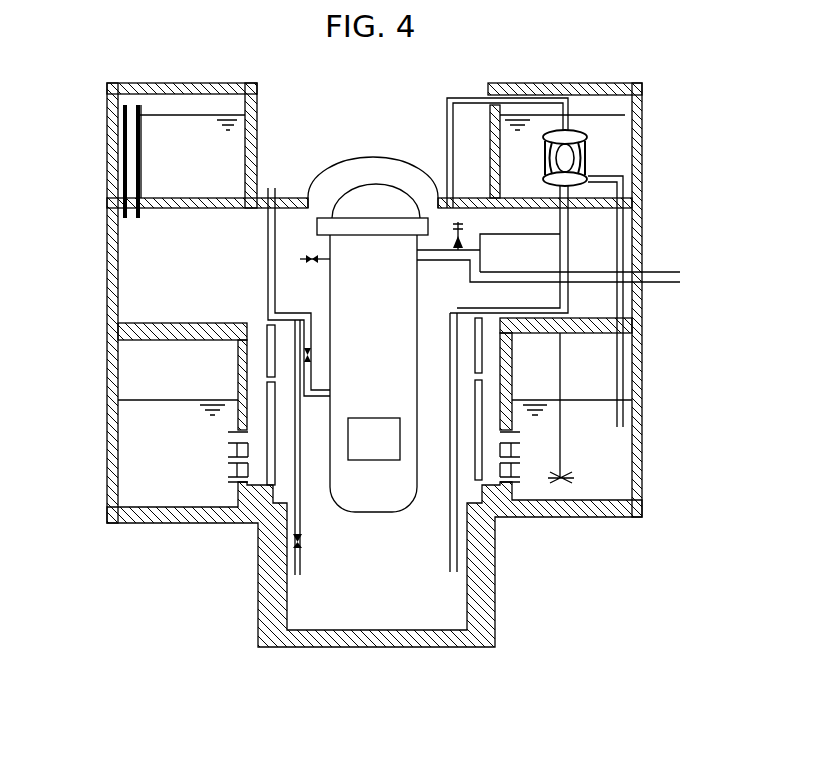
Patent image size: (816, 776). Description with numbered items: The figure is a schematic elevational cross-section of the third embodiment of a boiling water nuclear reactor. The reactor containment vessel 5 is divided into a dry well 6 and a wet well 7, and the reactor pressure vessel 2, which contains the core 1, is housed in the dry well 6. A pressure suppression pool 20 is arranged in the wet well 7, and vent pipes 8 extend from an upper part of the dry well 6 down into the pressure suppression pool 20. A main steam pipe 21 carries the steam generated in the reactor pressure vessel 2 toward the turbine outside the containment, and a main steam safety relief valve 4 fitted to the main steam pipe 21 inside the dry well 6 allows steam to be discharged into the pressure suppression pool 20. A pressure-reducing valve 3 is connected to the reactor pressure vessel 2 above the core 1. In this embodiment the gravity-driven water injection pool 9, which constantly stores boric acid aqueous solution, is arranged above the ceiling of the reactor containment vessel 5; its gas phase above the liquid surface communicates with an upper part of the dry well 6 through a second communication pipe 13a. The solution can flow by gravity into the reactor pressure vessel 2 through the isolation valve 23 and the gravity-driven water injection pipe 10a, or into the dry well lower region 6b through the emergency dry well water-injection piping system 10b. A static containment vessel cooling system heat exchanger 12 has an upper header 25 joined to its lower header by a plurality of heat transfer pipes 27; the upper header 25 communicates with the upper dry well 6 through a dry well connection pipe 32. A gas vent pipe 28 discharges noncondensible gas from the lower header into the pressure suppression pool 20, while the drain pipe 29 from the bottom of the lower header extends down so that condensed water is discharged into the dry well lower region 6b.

The core 1 is at (385, 418).
The reactor pressure vessel 2 is at (327, 285).
The pressure-reducing valve 3 is at (307, 259).
The main steam safety relief valve 4 is at (470, 233).
The reactor containment vessel 5 is at (662, 250).
The dry well 6 is at (627, 235).
The dry well lower region 6b is at (435, 596).
The wet well 7 is at (577, 390).
The vent pipe 8 is at (492, 358).
The gravity-driven water injection pool 9 is at (173, 122).
The gravity-driven water injection pipe 10a is at (322, 390).
The emergency dry well water-injection piping system 10b is at (303, 500).
The static containment vessel cooling system heat exchanger 12 is at (620, 146).
The second communication pipe 13a is at (133, 150).
The pressure suppression pool 20 is at (603, 480).
The main steam pipe 21 is at (652, 287).
The isolation valve 23 is at (312, 353).
The upper header 25 is at (587, 138).
The heat transfer pipe 27 is at (598, 162).
The gas vent pipe 28 is at (624, 356).
The drain pipe 29 is at (453, 523).
The dry well connection pipe 32 is at (487, 97).